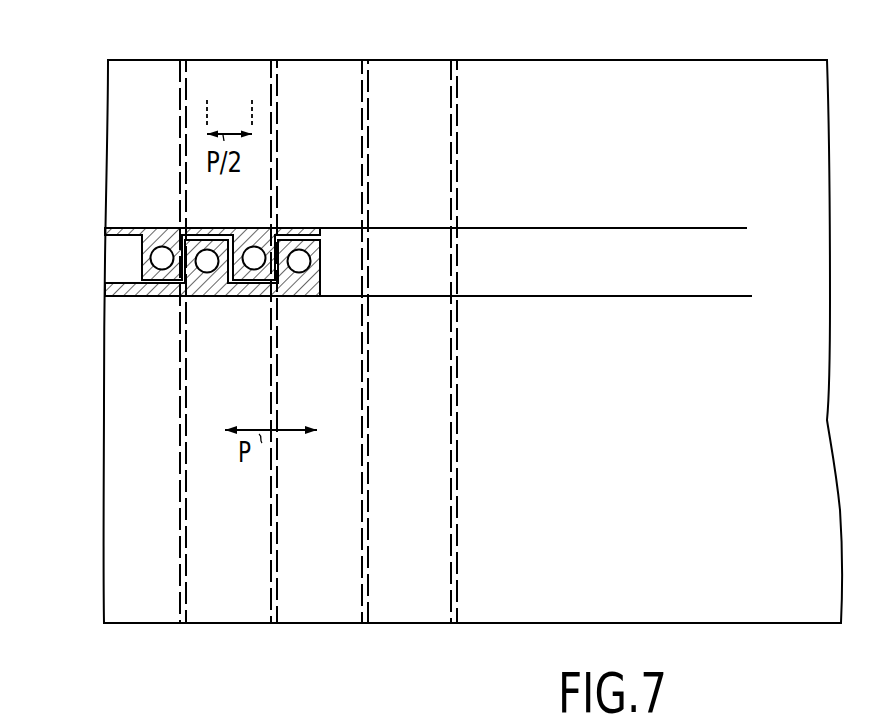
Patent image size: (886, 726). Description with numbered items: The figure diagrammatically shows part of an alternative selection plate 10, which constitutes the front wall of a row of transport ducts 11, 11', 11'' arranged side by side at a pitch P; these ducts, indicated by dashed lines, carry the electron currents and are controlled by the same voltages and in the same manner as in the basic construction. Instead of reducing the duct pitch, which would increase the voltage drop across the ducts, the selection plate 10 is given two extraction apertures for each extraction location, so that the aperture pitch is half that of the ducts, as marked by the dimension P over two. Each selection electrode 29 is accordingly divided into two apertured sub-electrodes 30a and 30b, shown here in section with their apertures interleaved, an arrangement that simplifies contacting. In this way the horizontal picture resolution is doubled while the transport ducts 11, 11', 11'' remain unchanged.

The selection plate 10 is at (683, 77).
The transport duct 11 is at (208, 320).
The transport duct 11' is at (300, 320).
The transport duct 11'' is at (394, 320).
The selection electrode 29 is at (392, 261).
The apertured sub-electrode 30a is at (150, 228).
The apertured sub-electrode 30b is at (118, 296).